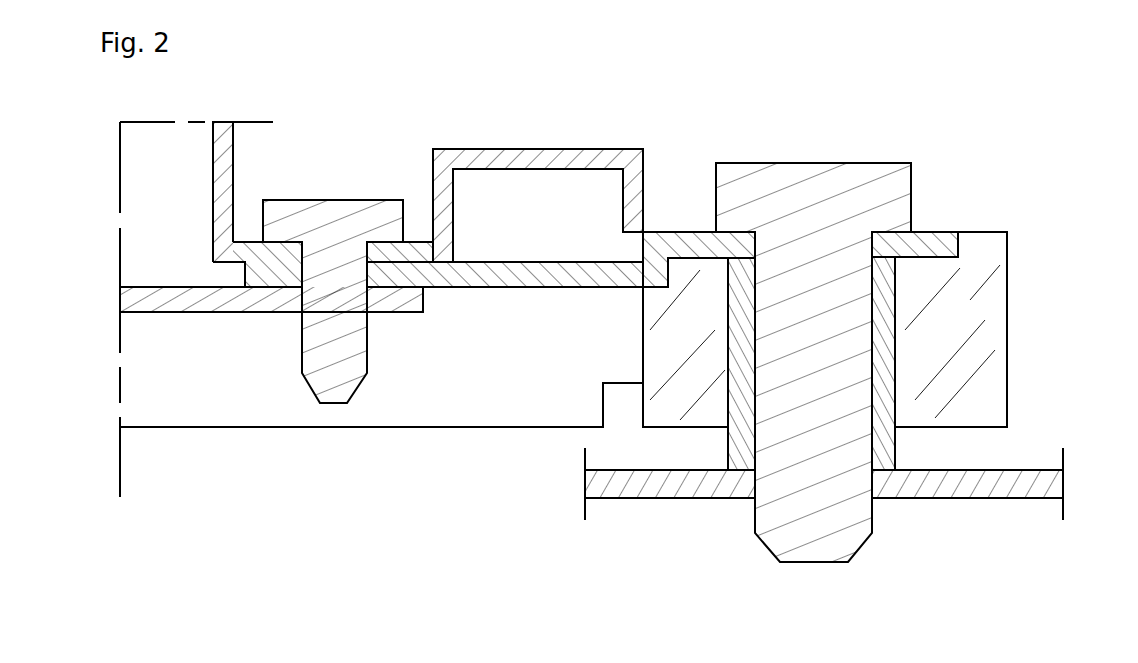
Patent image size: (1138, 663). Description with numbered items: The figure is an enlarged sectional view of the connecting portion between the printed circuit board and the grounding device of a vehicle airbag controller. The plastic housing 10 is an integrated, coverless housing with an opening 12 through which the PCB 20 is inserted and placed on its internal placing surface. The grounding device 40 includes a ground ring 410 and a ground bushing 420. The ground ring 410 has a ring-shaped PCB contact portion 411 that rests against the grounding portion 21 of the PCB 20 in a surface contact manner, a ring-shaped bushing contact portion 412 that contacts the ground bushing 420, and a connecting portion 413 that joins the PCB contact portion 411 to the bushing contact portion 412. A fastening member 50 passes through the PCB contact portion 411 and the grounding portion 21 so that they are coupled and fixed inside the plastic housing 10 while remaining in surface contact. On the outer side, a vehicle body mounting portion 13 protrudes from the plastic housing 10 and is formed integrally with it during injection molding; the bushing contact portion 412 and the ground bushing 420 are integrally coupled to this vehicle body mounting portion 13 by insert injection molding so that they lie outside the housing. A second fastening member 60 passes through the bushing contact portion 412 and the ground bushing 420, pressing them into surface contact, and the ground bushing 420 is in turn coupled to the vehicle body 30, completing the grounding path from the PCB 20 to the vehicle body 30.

The plastic housing 10 is at (540, 162).
The opening 12 is at (176, 394).
The vehicle body mounting portion 13 is at (958, 282).
The printed circuit board 20 is at (131, 294).
The grounding portion 21 is at (393, 300).
The vehicle body 30 is at (1002, 498).
The grounding device 40 is at (900, 383).
The fastening member 50 is at (358, 218).
The fastening member 60 is at (820, 178).
The ground ring 410 is at (474, 290).
The PCB contact portion 411 is at (268, 278).
The bushing contact portion 412 is at (930, 243).
The connecting portion 413 is at (598, 262).
The ground bushing 420 is at (888, 323).